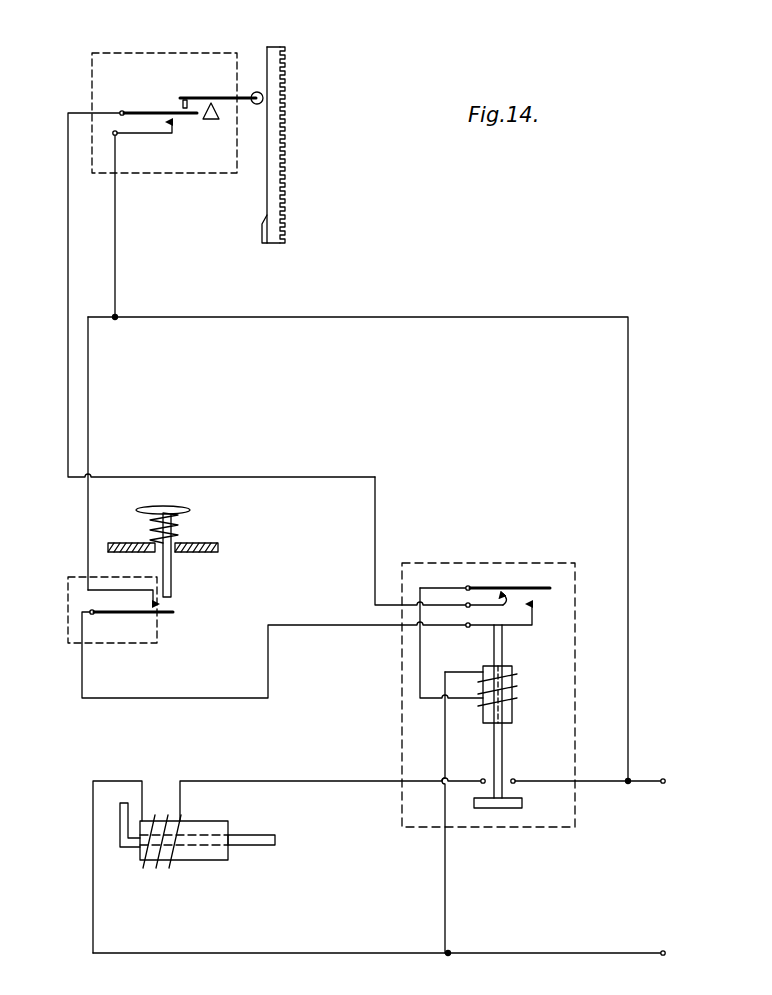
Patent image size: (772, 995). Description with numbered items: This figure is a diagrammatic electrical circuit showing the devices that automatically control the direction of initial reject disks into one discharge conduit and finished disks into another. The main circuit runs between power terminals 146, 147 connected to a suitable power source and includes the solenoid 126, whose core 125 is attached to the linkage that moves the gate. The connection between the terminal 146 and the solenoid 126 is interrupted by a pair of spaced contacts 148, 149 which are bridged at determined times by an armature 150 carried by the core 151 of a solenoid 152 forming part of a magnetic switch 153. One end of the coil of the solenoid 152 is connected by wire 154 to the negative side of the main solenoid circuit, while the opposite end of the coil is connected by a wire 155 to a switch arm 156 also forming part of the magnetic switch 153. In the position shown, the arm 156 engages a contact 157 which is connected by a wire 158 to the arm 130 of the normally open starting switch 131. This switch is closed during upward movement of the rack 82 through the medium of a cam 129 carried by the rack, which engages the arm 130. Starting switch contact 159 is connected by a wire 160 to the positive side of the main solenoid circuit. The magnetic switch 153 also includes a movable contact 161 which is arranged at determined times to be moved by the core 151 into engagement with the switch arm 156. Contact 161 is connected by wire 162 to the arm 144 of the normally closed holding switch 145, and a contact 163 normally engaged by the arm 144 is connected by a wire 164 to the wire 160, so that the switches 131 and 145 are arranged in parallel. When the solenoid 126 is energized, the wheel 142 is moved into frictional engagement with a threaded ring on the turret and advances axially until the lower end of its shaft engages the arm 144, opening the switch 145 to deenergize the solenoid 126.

The rack 82 is at (285, 110).
The core 125 is at (262, 845).
The solenoid 126 is at (222, 822).
The cam 129 is at (262, 233).
The arm 130 is at (148, 111).
The switch 131 is at (174, 53).
The wheel 142 is at (193, 510).
The arm 144 is at (125, 615).
The switch 145 is at (68, 595).
The power terminal 146 is at (666, 781).
The power terminal 147 is at (666, 952).
The contact 148 is at (483, 778).
The contact 149 is at (514, 779).
The armature 150 is at (488, 808).
The core 151 is at (503, 740).
The solenoid 152 is at (513, 672).
The magnetic switch 153 is at (488, 695).
The wire 154 is at (449, 889).
The wire 155 is at (420, 655).
The switch arm 156 is at (525, 586).
The contact 157 is at (495, 590).
The wire 158 is at (377, 503).
The starting switch contact 159 is at (168, 134).
The wire 160 is at (471, 316).
The movable contact 161 is at (533, 618).
The wire 162 is at (312, 626).
The contact 163 is at (158, 607).
The wire 164 is at (88, 503).